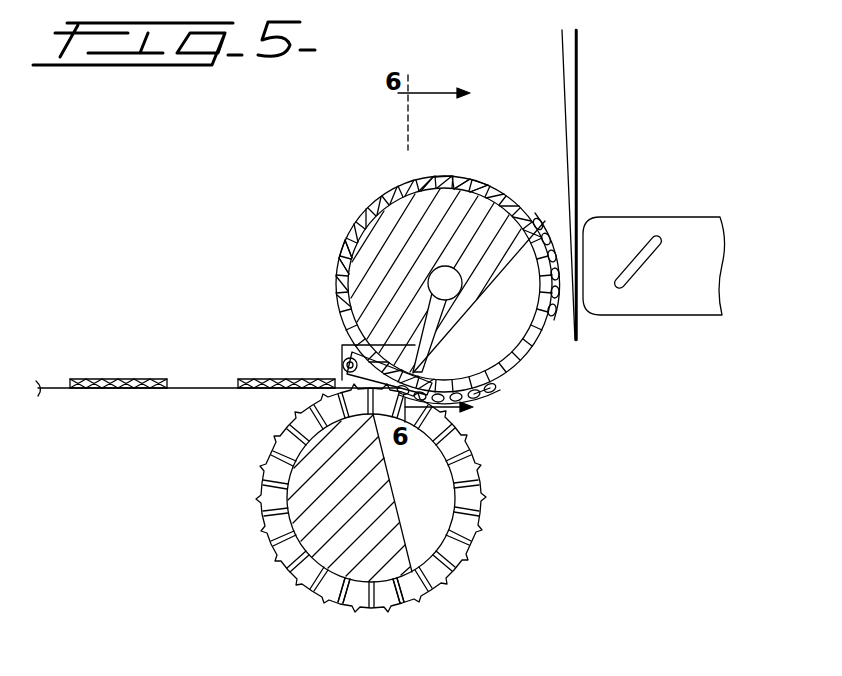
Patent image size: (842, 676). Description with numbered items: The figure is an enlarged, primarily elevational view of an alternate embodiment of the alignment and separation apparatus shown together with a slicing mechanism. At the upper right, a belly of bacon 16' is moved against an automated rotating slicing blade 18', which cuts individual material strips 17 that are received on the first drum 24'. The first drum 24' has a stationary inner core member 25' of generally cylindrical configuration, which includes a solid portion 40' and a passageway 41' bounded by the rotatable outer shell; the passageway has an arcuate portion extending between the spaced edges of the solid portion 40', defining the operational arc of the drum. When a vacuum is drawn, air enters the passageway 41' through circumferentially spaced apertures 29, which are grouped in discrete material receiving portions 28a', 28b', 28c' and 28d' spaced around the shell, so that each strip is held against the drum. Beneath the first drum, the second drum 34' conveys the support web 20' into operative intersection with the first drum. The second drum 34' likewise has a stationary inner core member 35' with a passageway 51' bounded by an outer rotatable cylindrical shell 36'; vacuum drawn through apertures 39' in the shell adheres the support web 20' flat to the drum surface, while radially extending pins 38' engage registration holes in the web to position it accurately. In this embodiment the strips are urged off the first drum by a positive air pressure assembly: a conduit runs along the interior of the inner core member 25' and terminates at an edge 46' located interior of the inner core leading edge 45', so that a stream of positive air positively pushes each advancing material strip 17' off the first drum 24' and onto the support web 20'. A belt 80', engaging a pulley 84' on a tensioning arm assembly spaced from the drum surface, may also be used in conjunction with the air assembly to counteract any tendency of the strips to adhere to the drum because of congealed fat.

The belly of bacon 16' is at (654, 239).
The material strip 17 is at (516, 418).
The material strip 17' is at (114, 358).
The slicing blade 18' is at (621, 185).
The support web 20' is at (218, 357).
The first drum 24' is at (436, 261).
The inner core member 25' is at (410, 280).
The discrete material receiving portion 28a' is at (538, 234).
The discrete material receiving portion 28b' is at (506, 393).
The discrete material receiving portion 28c' is at (307, 265).
The discrete material receiving portion 28d' is at (493, 155).
The apertures 29 is at (430, 178).
The second drum 34' is at (339, 498).
The inner core member 35' is at (321, 512).
The outer rotatable cylindrical shell 36' is at (403, 623).
The radially extending lugs or pins 38' is at (409, 498).
The apertures 39' is at (306, 619).
The solid portion 40' is at (444, 284).
The passageway 41' is at (488, 285).
The leading edge 45' is at (479, 297).
The edge 46' is at (359, 354).
The passageway 51' is at (371, 498).
The belt 80' is at (333, 335).
The pulley 84' is at (321, 356).